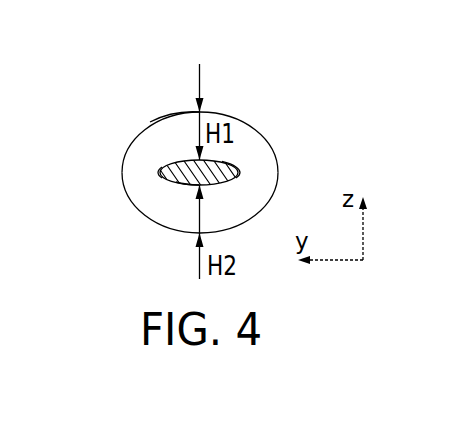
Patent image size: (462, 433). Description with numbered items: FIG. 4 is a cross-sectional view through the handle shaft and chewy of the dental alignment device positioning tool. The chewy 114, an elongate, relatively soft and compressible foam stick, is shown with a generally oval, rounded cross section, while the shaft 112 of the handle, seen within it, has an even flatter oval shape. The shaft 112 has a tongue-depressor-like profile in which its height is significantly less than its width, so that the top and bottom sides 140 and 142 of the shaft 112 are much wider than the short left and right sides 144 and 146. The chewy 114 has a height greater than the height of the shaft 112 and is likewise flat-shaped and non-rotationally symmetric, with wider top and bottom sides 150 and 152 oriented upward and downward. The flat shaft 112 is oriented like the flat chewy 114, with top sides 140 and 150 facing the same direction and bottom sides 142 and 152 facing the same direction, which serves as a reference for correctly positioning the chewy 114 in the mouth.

The shaft 112 is at (230, 160).
The chewy 114 is at (216, 112).
The top side of the shaft 140 is at (184, 162).
The bottom side of the shaft 142 is at (190, 186).
The left side of the shaft 144 is at (239, 174).
The right side of the shaft 146 is at (160, 173).
The top side of the chewy 150 is at (178, 112).
The bottom side of the chewy 152 is at (175, 234).